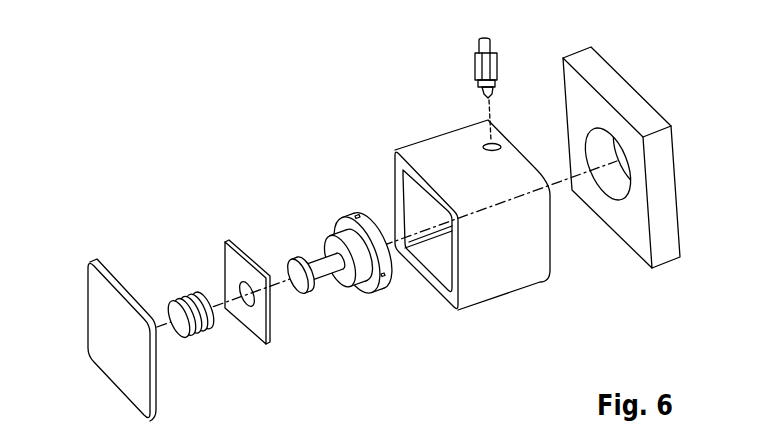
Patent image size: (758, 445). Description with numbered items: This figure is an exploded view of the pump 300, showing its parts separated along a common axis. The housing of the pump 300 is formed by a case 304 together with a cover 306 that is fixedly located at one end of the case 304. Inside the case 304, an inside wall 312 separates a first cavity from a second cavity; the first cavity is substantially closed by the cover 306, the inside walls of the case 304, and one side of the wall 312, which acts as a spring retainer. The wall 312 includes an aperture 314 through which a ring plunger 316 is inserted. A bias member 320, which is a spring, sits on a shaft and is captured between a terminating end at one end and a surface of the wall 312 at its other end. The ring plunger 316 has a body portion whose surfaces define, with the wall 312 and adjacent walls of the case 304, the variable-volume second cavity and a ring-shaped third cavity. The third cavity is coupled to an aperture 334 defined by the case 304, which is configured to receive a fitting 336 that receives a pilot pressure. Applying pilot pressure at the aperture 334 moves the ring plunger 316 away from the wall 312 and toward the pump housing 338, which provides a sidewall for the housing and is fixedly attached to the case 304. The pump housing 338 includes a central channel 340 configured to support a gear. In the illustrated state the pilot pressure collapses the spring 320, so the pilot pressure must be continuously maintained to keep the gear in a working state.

The pump 300 is at (220, 111).
The case 304 is at (500, 280).
The cover 306 is at (123, 370).
The inside wall 312 is at (255, 323).
The aperture 314 is at (240, 260).
The ring plunger 316 is at (338, 222).
The bias member 320 is at (182, 292).
The aperture 334 is at (484, 144).
The fitting 336 is at (497, 63).
The pump housing 338 is at (627, 100).
The central channel 340 is at (612, 188).